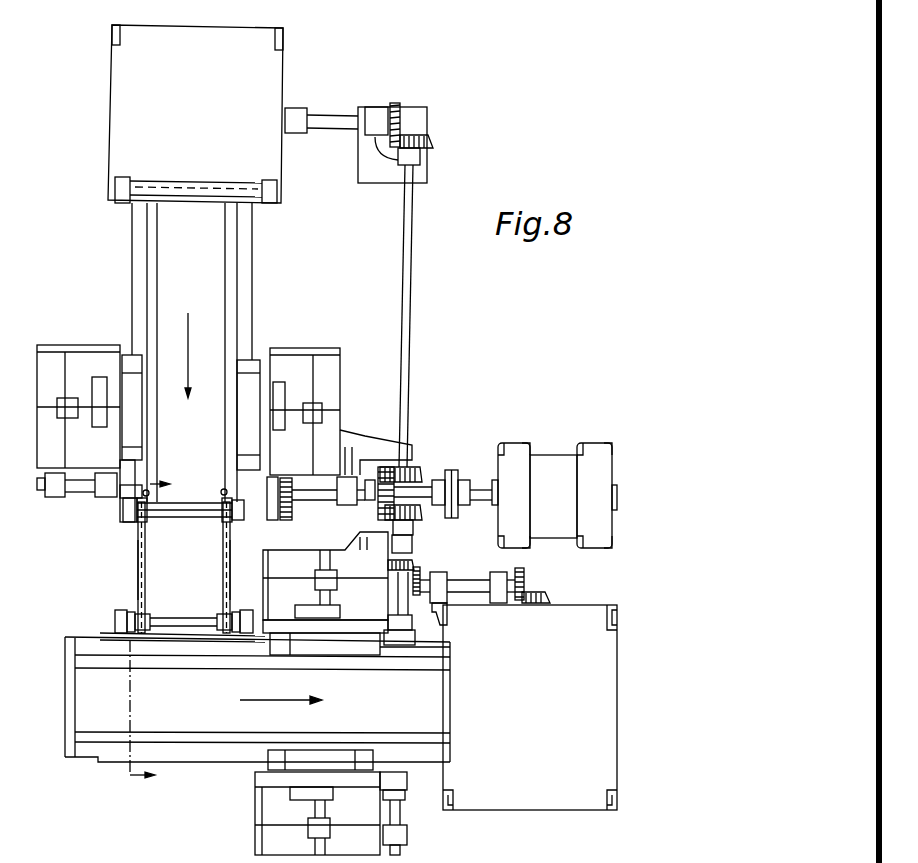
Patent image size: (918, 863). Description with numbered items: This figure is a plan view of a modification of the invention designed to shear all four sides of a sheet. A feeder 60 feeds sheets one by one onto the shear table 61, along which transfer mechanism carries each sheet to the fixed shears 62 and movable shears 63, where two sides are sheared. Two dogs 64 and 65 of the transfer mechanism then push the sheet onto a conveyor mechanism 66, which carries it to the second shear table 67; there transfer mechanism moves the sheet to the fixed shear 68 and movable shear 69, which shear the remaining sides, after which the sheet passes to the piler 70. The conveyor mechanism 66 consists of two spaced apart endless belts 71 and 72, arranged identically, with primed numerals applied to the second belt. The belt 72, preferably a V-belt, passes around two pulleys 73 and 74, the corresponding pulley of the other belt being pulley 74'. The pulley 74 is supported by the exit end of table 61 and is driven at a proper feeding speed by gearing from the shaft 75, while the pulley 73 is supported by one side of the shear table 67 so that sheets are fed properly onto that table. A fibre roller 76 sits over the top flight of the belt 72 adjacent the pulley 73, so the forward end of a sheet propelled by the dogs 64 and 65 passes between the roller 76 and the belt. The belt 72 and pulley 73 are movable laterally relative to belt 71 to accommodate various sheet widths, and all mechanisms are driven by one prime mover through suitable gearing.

The feeder 60 is at (122, 105).
The shear table 61 is at (165, 267).
The fixed shears 62 is at (245, 395).
The movable shears 63 is at (128, 392).
The dog 64 is at (224, 489).
The dog 65 is at (125, 496).
The conveyor mechanism 66 is at (165, 553).
The shear table 67 is at (234, 722).
The fixed shear 68 is at (340, 647).
The movable shear 69 is at (300, 762).
The piler 70 is at (522, 806).
The endless belt 71 is at (230, 578).
The endless belt 72 is at (138, 578).
The pulley 73 is at (134, 618).
The pulley 74 is at (112, 524).
The pulley 74' is at (250, 513).
The shaft 75 is at (323, 492).
The roller 76 is at (137, 622).